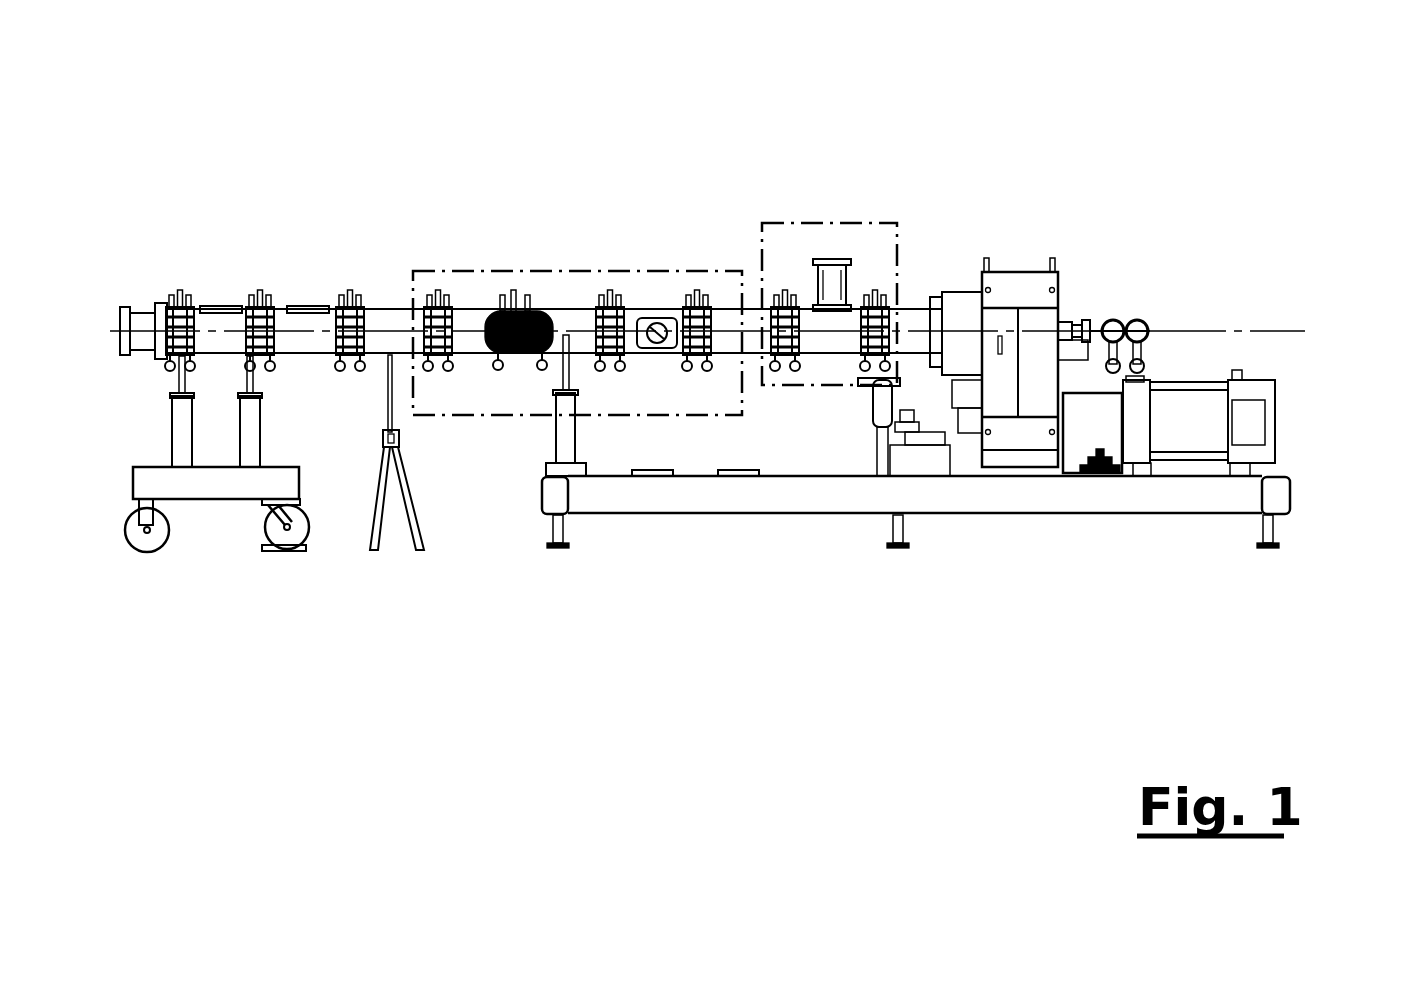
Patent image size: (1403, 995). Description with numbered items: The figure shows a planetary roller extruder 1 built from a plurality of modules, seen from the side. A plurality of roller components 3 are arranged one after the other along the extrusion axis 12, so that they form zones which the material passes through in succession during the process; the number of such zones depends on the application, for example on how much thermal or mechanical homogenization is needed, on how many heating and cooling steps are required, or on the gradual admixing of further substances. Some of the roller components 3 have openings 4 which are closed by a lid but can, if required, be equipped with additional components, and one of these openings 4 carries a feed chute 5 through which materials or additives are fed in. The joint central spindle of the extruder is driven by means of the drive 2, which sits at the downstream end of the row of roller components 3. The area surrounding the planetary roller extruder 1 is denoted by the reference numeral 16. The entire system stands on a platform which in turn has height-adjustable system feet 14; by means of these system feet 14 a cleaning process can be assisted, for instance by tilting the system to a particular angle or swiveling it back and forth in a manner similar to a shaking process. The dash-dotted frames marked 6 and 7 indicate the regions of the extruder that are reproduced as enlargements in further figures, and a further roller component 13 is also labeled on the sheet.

The planetary roller extruder 1 is at (645, 176).
The drive 2 is at (975, 308).
The roller components 3 is at (192, 322).
The openings 4 is at (218, 312).
The feed chute 5 is at (832, 292).
The enlargement region 6 is at (478, 271).
The enlargement region 7 is at (772, 223).
The extrusion axis 12 is at (1215, 331).
The pipe clamp of pump module 13 is at (608, 300).
The system feet 14 is at (1272, 542).
The area surrounding the planetary roller extruder 16 is at (968, 242).